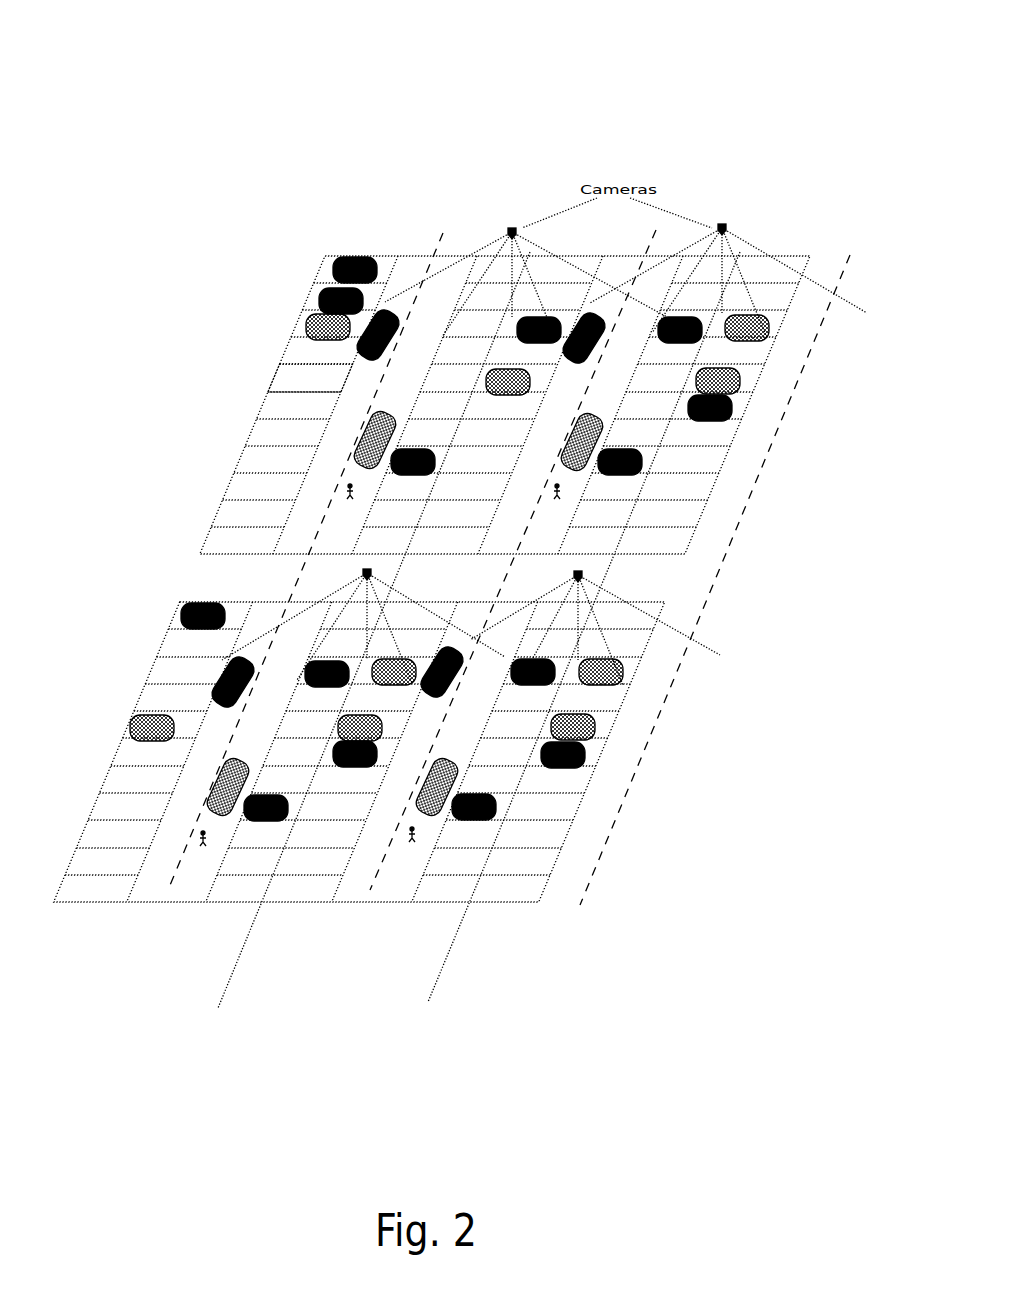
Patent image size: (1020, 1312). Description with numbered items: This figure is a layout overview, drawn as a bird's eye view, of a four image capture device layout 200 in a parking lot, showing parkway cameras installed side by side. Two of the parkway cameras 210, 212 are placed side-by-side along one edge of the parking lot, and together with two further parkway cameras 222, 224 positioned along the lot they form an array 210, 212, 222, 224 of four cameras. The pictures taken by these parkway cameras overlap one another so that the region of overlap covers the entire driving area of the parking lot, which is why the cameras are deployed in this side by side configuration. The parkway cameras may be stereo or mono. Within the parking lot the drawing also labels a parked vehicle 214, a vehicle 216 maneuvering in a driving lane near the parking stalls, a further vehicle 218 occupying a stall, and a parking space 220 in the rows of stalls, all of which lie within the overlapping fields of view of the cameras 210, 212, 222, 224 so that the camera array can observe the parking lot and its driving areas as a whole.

The parking facility environment 200 is at (183, 77).
The parkway camera 210 is at (513, 230).
The parkway camera 212 is at (722, 228).
The parked vehicle 214 is at (333, 245).
The vehicle entering parking space 216 is at (388, 313).
The vehicle 218 is at (316, 322).
The parking space 220 is at (300, 390).
The parkway camera 222 is at (353, 562).
The parkway camera 224 is at (590, 560).